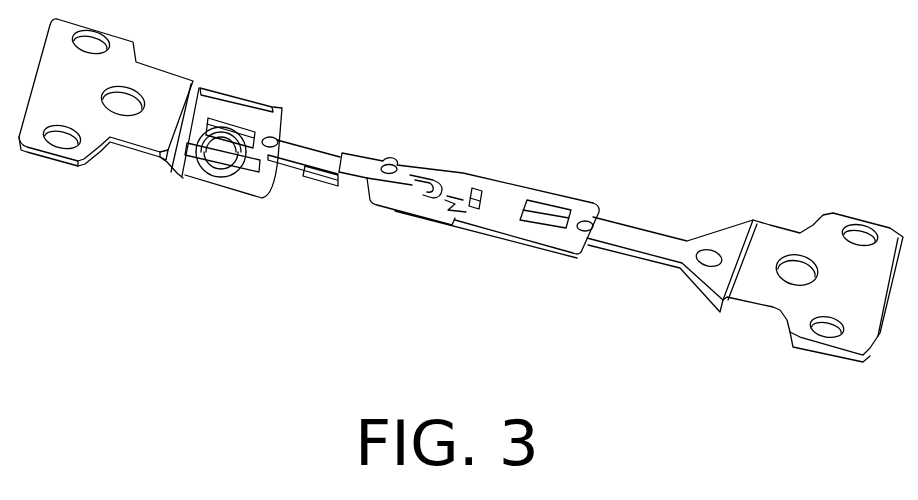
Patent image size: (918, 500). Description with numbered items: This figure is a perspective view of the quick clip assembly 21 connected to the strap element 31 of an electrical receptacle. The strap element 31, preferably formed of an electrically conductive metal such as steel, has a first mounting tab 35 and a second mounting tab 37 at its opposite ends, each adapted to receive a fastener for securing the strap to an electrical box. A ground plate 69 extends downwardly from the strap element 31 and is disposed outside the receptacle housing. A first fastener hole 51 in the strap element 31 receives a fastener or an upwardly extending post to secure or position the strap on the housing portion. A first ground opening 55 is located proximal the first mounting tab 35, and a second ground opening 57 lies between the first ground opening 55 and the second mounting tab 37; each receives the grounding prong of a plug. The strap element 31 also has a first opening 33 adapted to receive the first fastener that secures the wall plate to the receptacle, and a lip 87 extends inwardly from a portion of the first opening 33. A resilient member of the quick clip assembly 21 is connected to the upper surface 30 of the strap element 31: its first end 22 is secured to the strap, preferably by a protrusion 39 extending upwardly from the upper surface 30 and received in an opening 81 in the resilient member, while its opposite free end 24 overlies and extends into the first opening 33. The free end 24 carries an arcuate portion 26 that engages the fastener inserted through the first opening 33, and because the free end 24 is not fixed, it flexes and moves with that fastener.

The quick clip assembly 21 is at (358, 148).
The first end 22 is at (308, 182).
The free end 24 is at (460, 217).
The arcuate portion 26 is at (412, 210).
The upper surface 30 is at (515, 197).
The strap element 31 is at (552, 258).
The first opening 33 is at (455, 180).
The first mounting tab 35 is at (56, 166).
The second mounting tab 37 is at (817, 353).
The protrusion 39 is at (398, 163).
The first fastener hole 51 is at (716, 253).
The first ground opening 55 is at (245, 135).
The second ground opening 57 is at (553, 213).
The ground plate 69 is at (212, 192).
The opening 81 is at (377, 205).
The lip 87 is at (470, 185).